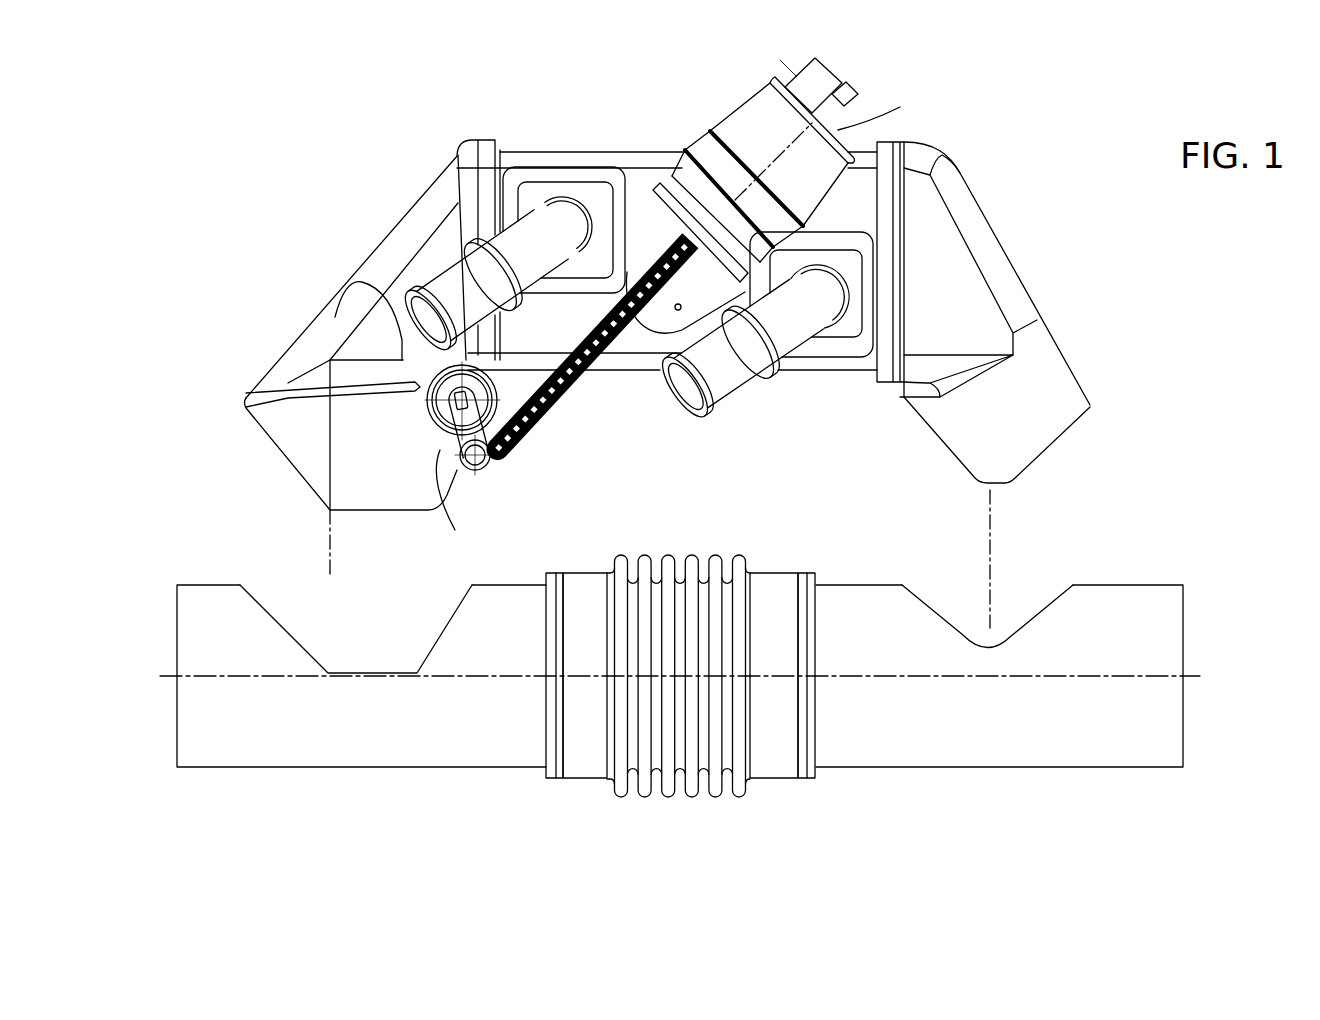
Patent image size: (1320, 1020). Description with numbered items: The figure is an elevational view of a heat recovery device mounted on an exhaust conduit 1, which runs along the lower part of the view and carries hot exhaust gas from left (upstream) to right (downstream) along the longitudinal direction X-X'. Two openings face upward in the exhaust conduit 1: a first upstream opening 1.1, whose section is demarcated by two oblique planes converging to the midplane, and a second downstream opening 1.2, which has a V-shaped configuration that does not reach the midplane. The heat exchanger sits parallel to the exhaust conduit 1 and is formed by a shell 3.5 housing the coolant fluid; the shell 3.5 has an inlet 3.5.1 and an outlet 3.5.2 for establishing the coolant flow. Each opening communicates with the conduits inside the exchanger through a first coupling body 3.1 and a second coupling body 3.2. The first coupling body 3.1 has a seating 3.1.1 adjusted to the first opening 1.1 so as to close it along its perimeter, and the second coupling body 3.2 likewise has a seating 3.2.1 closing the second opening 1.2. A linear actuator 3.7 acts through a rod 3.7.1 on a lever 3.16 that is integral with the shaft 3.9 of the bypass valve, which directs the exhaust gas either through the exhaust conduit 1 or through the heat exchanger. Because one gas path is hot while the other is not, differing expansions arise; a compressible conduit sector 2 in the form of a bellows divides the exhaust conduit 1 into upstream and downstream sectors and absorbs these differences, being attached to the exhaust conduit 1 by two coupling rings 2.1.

The exhaust conduit 1 is at (320, 740).
The first upstream opening 1.1 is at (330, 667).
The second downstream opening 1.2 is at (1030, 620).
The compressible conduit sector 2 is at (748, 783).
The coupling rings 2.1 is at (550, 740).
The first coupling body 3.1 is at (318, 312).
The seating 3.1.1 is at (280, 450).
The second coupling body 3.2 is at (1032, 387).
The seating 3.2.1 is at (1050, 447).
The shell 3.5 is at (597, 152).
The inlet 3.5.1 is at (440, 283).
The outlet 3.5.2 is at (733, 380).
The linear actuator 3.7 is at (802, 163).
The rod 3.7.1 is at (567, 392).
The shaft 3.9 is at (447, 402).
The lever 3.16 is at (462, 462).